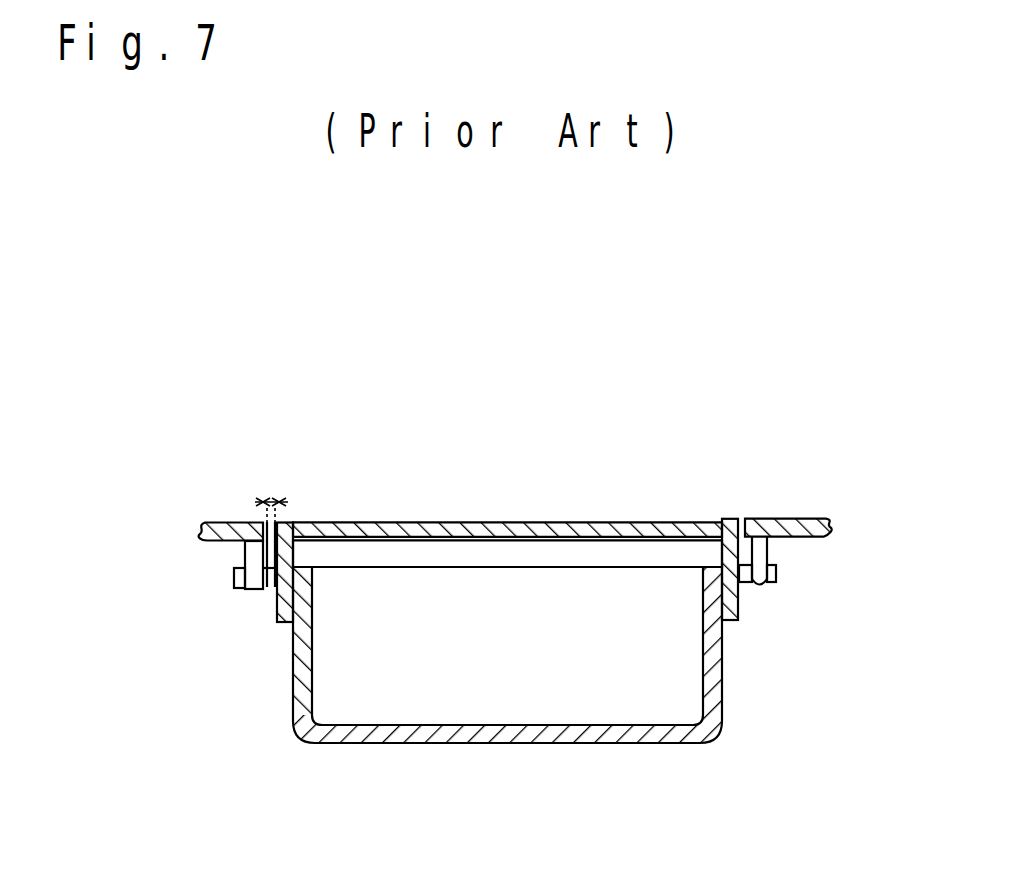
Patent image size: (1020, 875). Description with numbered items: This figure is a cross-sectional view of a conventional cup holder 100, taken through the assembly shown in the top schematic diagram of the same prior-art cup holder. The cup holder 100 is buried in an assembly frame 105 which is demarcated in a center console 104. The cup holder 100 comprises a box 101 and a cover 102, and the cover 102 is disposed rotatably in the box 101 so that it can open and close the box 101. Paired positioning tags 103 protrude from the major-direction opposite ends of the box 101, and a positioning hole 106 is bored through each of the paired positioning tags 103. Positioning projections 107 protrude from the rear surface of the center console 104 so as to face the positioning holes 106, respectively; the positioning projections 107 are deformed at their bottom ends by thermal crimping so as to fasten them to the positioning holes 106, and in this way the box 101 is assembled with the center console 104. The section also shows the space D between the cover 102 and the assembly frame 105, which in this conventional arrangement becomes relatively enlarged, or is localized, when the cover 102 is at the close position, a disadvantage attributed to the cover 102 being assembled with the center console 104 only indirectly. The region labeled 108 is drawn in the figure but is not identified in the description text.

The cup holder 100 is at (773, 235).
The box 101 is at (300, 615).
The cover 102 is at (593, 520).
The positioning tag 103 is at (775, 573).
The center console 104 is at (223, 522).
The assembly frame 105 is at (290, 522).
The positioning hole 106 is at (263, 588).
The positioning projection 107 is at (245, 557).
The clearance space 108 is at (500, 567).